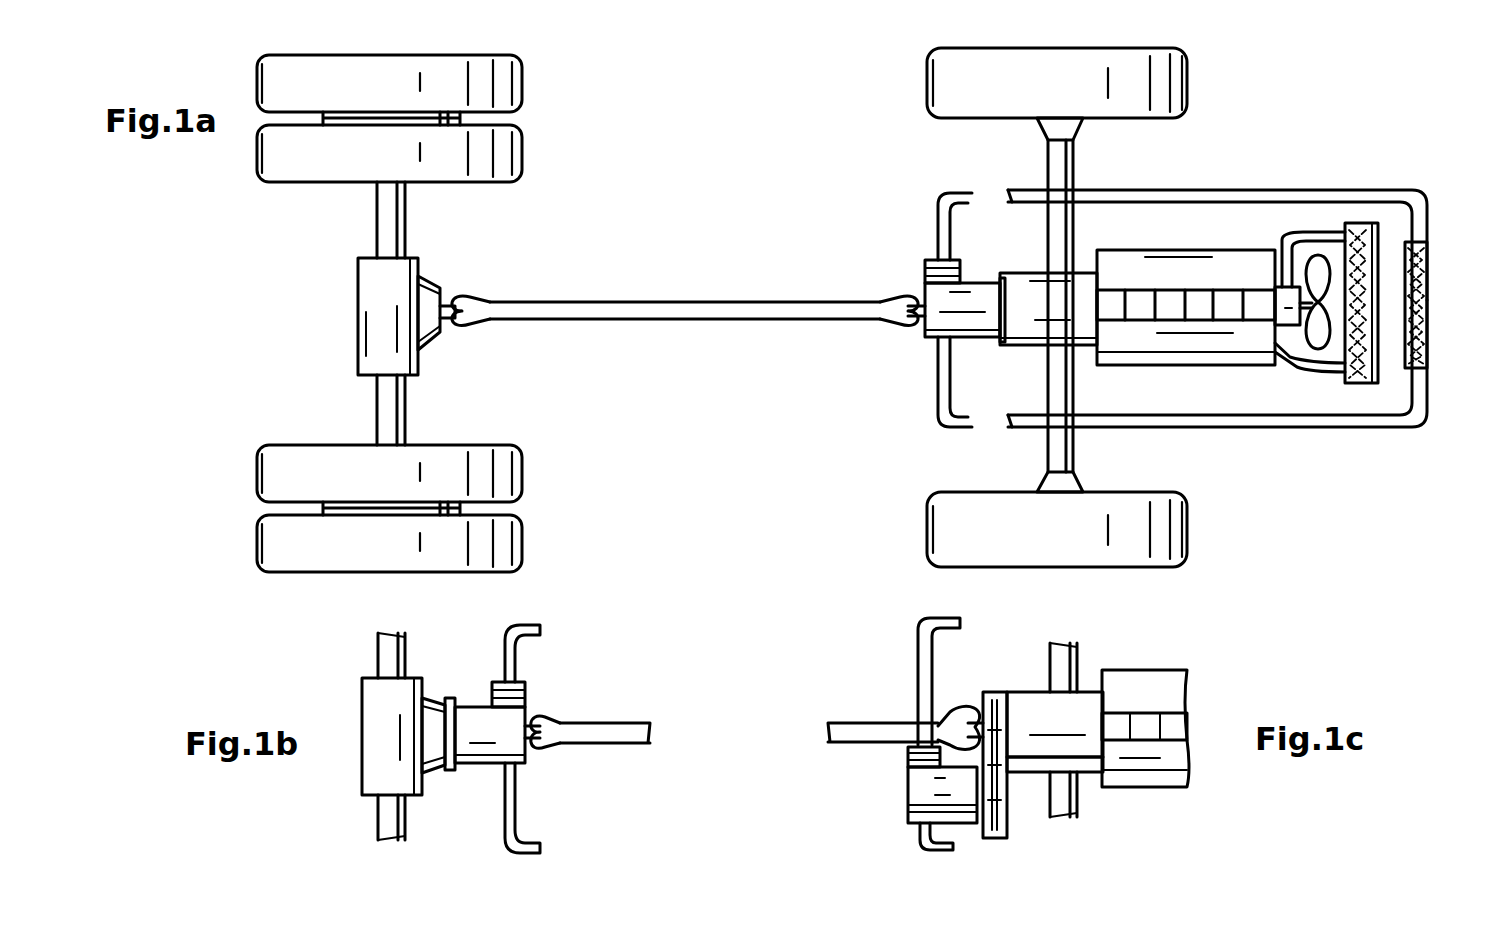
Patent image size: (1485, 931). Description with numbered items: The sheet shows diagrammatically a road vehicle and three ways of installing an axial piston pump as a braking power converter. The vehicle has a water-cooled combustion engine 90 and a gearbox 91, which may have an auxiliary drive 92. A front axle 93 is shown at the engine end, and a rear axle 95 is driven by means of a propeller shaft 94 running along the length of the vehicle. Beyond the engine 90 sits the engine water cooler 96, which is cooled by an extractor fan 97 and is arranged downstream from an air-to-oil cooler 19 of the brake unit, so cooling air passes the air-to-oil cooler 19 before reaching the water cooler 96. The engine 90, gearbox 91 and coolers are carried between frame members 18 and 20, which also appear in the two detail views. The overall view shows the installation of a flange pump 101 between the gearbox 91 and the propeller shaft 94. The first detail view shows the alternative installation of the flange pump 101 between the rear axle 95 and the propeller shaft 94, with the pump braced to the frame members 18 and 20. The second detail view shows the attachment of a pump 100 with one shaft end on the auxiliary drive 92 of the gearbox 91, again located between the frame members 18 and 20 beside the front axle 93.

In FIG. 1a, the frame side rail 18 is at (1204, 192).
In FIG. 1b, the frame side rail 18 is at (542, 635).
In FIG. 1c, the frame side rail 18 is at (921, 623).
In FIG. 1a, the air-to-oil cooler 19 is at (1428, 244).
In FIG. 1a, the frame side rail 20 is at (1237, 417).
In FIG. 1b, the frame side rail 20 is at (548, 845).
In FIG. 1c, the frame side rail 20 is at (933, 850).
In FIG. 1a, the combustion engine 90 is at (1248, 262).
In FIG. 1a, the gearbox 91 is at (1035, 328).
In FIG. 1c, the gearbox 91 is at (1031, 705).
In FIG. 1c, the auxiliary drive 92 is at (1001, 806).
In FIG. 1a, the front axle 93 is at (1066, 168).
In FIG. 1c, the front axle 93 is at (1063, 730).
In FIG. 1a, the propeller shaft 94 is at (697, 305).
In FIG. 1a, the rear axle 95 is at (398, 271).
In FIG. 1a, the engine water cooler 96 is at (1366, 228).
In FIG. 1a, the extractor fan 97 is at (1316, 340).
In FIG. 1c, the pump 100 is at (918, 790).
In FIG. 1a, the flange pump 101 is at (935, 340).
In FIG. 1b, the flange pump 101 is at (478, 750).